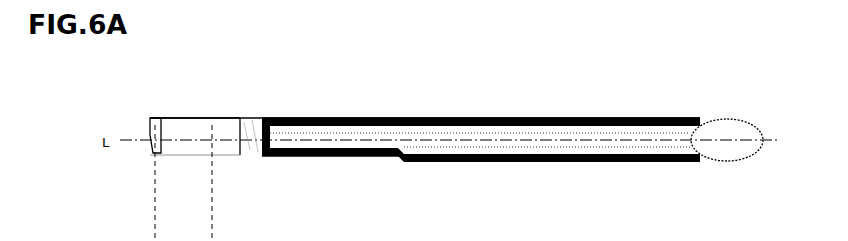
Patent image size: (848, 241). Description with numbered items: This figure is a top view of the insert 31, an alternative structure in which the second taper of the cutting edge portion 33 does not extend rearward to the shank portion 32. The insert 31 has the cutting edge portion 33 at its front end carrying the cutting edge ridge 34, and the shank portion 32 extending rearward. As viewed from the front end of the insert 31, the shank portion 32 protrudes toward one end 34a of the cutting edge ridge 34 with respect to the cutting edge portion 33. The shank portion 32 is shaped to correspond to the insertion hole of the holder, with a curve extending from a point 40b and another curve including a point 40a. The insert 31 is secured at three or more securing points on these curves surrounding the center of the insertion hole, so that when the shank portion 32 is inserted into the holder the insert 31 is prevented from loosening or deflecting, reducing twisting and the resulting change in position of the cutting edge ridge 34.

The insert 31 is at (609, 86).
The shank portion 32 is at (456, 128).
The cutting edge portion 33 is at (218, 105).
The cutting edge ridge 34 is at (148, 132).
The one end of cutting edge ridge 34a is at (153, 153).
The point 40a is at (412, 160).
The point 40b is at (415, 125).